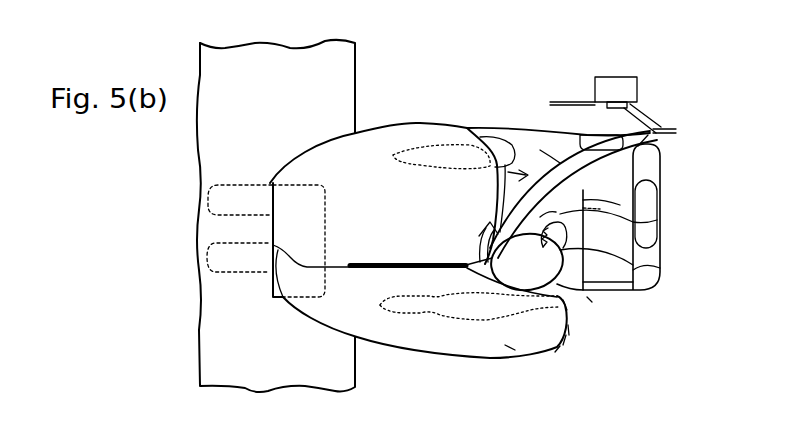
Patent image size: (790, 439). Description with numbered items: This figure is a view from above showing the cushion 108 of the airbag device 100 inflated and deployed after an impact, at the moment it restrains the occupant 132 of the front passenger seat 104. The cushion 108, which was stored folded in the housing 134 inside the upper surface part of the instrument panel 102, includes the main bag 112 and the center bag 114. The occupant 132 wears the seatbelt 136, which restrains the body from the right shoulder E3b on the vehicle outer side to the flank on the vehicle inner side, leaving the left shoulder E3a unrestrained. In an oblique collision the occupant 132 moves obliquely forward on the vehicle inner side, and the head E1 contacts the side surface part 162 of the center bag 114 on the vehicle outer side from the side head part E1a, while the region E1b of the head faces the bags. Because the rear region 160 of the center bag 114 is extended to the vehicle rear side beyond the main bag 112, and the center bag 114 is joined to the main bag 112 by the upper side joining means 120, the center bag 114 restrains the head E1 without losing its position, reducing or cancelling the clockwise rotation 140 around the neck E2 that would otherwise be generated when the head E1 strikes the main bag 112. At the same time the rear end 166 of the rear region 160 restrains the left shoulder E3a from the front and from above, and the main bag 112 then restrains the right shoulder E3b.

The airbag device 100 is at (270, 179).
The instrument panel 102 is at (340, 62).
The front passenger seat 104 is at (648, 165).
The cushion 108 is at (463, 130).
The main bag 112 is at (369, 150).
The center bag 114 is at (512, 347).
The upper side joining means 120 is at (407, 260).
The occupant 132 is at (583, 292).
The housing 134 is at (273, 287).
The seatbelt 136 is at (566, 165).
The rotation 140 is at (482, 227).
The rear region 160 is at (566, 334).
The side surface part 162 is at (562, 342).
The rear end 166 is at (573, 330).
The head E1 is at (640, 288).
The side head part E1a is at (517, 295).
The region E1b is at (563, 300).
The neck E2 is at (657, 220).
The left shoulder E3a is at (590, 302).
The right shoulder E3b is at (508, 160).